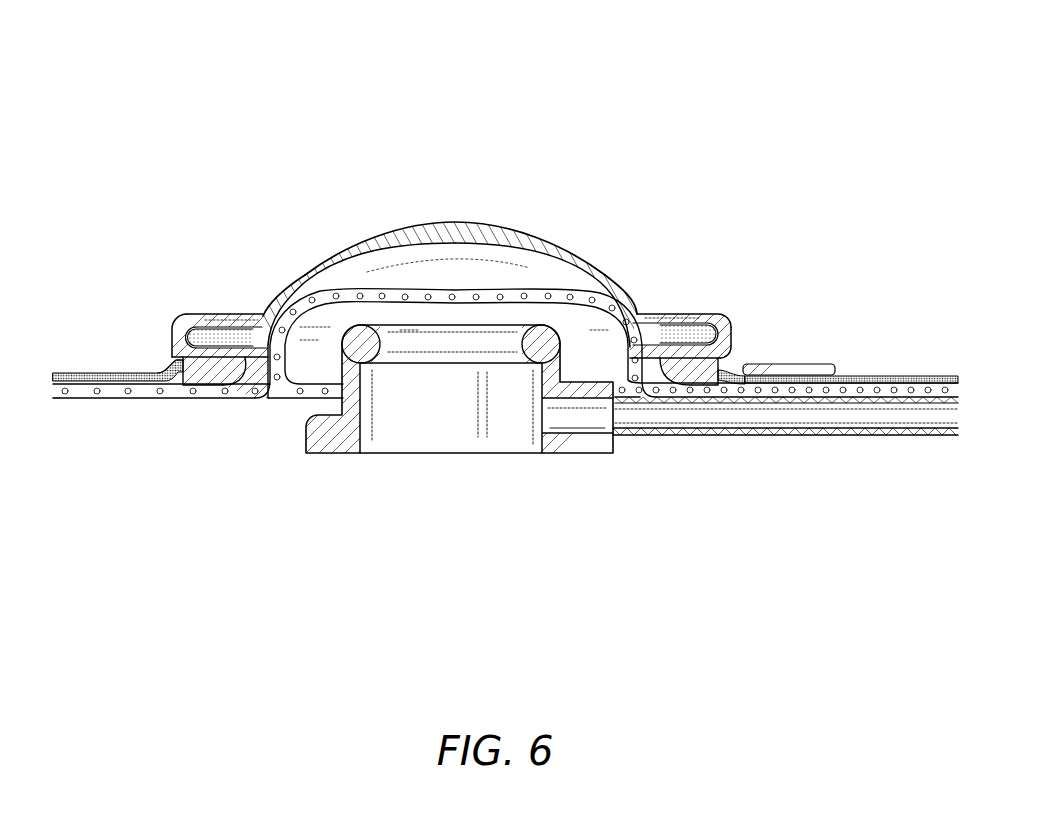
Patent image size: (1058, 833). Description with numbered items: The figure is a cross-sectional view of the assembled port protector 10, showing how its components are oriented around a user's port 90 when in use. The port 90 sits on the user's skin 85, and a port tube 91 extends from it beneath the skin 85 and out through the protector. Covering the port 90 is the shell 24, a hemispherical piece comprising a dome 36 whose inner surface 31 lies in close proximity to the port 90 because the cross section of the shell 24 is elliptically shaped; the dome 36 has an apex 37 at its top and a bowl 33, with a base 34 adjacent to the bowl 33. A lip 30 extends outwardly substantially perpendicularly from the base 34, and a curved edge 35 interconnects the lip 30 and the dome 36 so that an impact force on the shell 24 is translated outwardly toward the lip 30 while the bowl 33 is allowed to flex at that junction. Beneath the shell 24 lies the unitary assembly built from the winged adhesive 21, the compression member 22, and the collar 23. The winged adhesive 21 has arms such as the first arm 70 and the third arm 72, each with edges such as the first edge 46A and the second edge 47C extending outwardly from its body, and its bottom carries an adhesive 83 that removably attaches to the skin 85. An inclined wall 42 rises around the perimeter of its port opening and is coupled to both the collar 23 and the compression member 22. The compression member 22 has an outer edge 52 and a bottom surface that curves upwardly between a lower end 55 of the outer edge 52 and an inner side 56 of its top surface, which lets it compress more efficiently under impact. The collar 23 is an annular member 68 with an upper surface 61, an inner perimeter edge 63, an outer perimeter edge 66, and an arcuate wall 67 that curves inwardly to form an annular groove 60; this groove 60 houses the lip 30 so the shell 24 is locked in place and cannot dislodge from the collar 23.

The port protector 10 is at (318, 64).
The winged adhesive 21 is at (74, 373).
The compression member 22 is at (712, 368).
The collar 23 is at (170, 348).
The shell 24 is at (340, 247).
The lip 30 is at (213, 317).
The inner surface 31 is at (447, 283).
The bowl 33 is at (608, 278).
The base 34 is at (273, 312).
The curved edge 35 is at (650, 328).
The dome 36 is at (558, 245).
The apex 37 is at (465, 222).
The inclined wall 42 is at (158, 370).
The first edge 46A is at (860, 384).
The second edge 47C is at (124, 392).
The outer edge 52 is at (197, 386).
The lower end 55 is at (718, 381).
The inner side 56 is at (246, 393).
The annular groove 60 is at (715, 335).
The upper surface 61 is at (245, 322).
The inner perimeter edge 63 is at (259, 362).
The outer perimeter edge 66 is at (732, 343).
The arcuate wall 67 is at (723, 313).
The annular member 68 is at (170, 336).
The first arm 70 is at (903, 373).
The third arm 72 is at (97, 372).
The adhesive 83 is at (155, 384).
The skin 85 is at (682, 392).
The port 90 is at (338, 454).
The port tube 91 is at (940, 436).